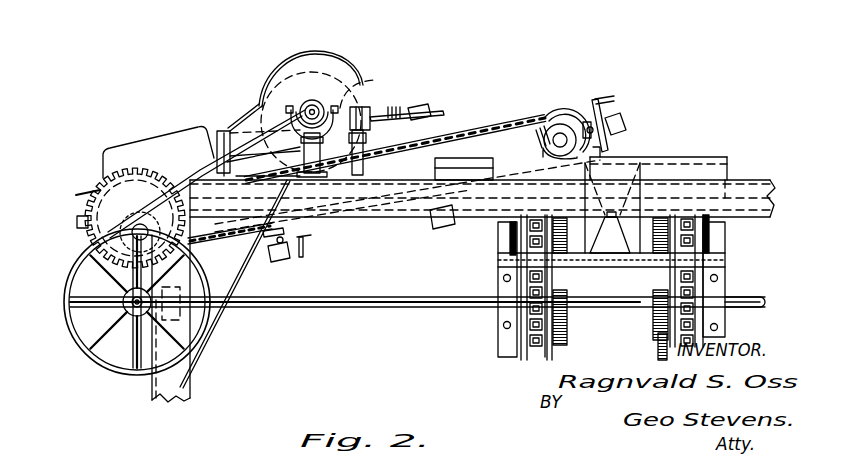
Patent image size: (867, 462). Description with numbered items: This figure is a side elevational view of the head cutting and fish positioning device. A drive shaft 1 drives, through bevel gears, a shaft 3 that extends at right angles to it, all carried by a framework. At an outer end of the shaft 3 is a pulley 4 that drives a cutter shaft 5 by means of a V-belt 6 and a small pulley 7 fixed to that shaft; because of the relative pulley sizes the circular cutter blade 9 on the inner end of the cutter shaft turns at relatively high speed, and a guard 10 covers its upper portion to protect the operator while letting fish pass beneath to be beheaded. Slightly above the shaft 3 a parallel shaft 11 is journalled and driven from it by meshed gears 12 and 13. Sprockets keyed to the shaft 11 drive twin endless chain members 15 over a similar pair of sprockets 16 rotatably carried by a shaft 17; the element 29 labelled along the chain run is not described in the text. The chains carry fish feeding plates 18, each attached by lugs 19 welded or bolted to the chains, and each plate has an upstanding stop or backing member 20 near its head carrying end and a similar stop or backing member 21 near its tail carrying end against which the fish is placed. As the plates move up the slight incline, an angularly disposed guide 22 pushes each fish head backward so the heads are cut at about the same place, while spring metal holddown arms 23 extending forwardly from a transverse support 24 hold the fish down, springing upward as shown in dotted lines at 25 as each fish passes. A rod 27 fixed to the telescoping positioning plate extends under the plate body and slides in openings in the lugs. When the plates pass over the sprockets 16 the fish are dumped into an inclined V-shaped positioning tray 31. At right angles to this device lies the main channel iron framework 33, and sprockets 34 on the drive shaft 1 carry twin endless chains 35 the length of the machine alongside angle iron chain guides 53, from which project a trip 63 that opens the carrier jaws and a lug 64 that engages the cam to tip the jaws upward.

The drive shaft 1 is at (740, 297).
The shaft 3 is at (132, 303).
The pulley 4 is at (118, 363).
The cutter shaft 5 is at (290, 75).
The V-belt 6 is at (220, 313).
The small pulley 7 is at (313, 95).
The circular cutter blade 9 is at (333, 83).
The guard 10 is at (255, 98).
The shaft 11 is at (100, 200).
The gear 12 is at (80, 207).
The gear 13 is at (110, 293).
The endless chain member 15 is at (460, 130).
The sprocket 16 is at (545, 116).
The shaft 17 is at (560, 135).
The fish feeding plate 18 is at (442, 100).
The lug 19 is at (430, 140).
The stop or backing member 20 is at (297, 249).
The stop or backing member 21 is at (610, 110).
The angularly disposed guide 22 is at (145, 148).
The spring metal holddown arm 23 is at (380, 120).
The transverse support 24 is at (217, 130).
The sprung position of holddown arms 25 is at (345, 100).
The rod 27 is at (283, 235).
The chain guide 29 is at (477, 145).
The positioning or receiving tray 31 is at (633, 232).
The channel iron framework member 33 is at (703, 238).
The sprocket 34 is at (706, 325).
The endless chain 35 is at (703, 222).
The angle iron chain guide 53 is at (663, 313).
The trip 63 is at (657, 355).
The trip or lug 64 is at (570, 282).